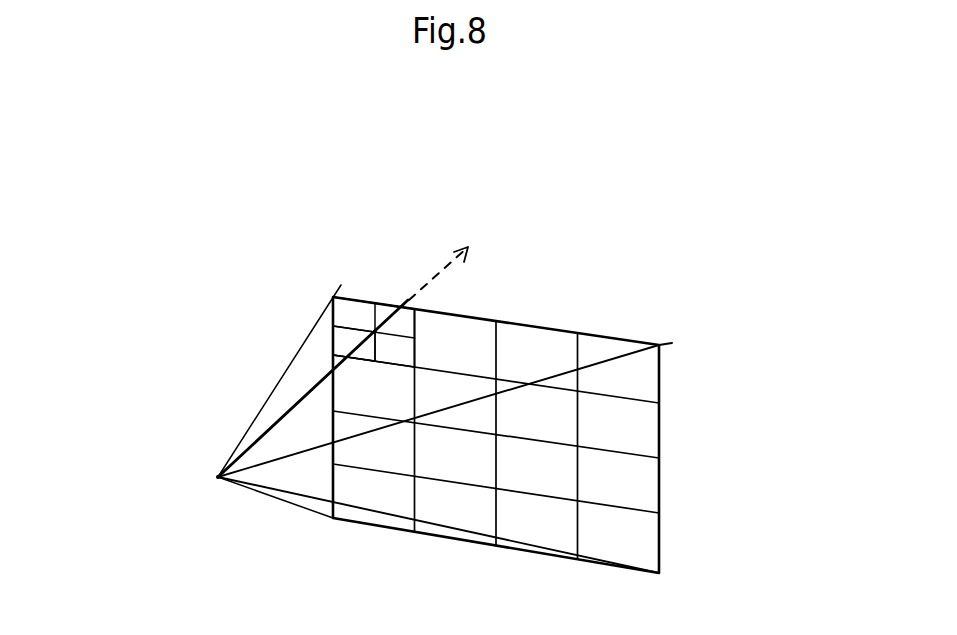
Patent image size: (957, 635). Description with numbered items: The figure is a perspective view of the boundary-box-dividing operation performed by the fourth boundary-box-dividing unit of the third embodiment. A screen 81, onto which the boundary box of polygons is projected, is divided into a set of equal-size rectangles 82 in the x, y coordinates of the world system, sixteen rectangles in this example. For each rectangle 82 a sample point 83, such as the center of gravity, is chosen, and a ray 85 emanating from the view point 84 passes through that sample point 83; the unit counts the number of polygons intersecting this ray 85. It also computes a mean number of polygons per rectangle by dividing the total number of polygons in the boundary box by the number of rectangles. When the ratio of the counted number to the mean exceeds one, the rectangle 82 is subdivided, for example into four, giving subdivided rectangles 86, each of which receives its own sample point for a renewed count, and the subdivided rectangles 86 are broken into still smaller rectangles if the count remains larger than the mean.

The screen 81 is at (660, 478).
The rectangle 82 is at (357, 298).
The sample point 83 is at (470, 218).
The view point 84 is at (218, 477).
The ray 85 is at (433, 285).
The subdivided rectangle 86 is at (345, 337).